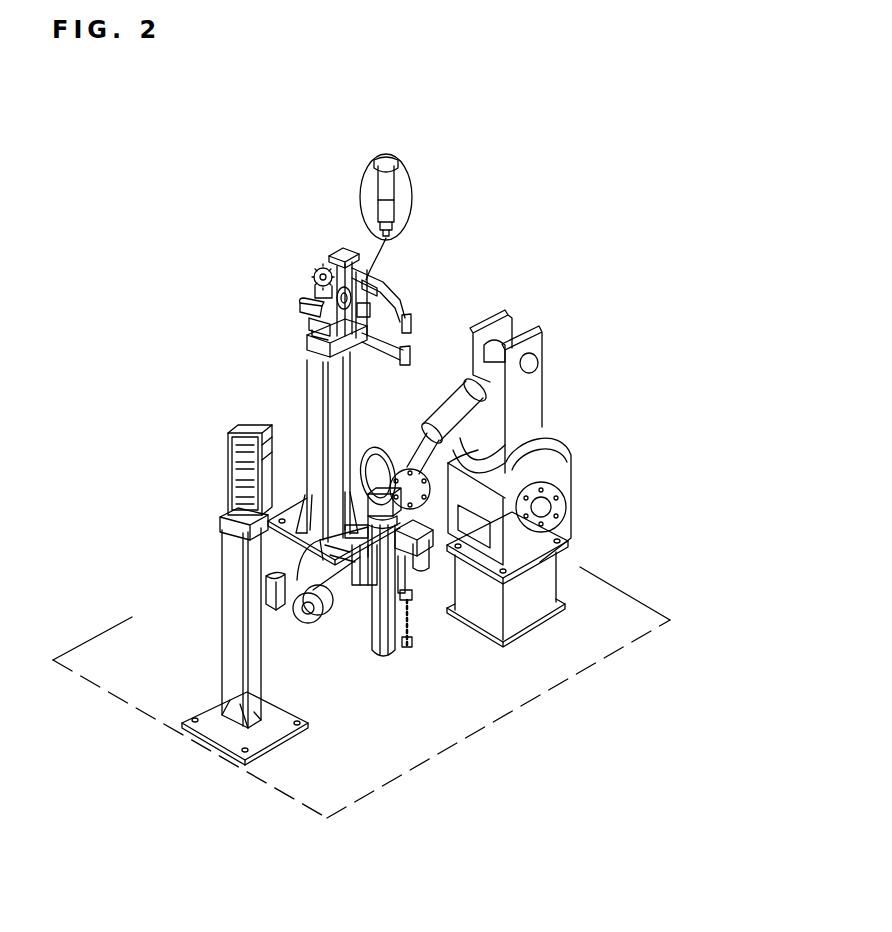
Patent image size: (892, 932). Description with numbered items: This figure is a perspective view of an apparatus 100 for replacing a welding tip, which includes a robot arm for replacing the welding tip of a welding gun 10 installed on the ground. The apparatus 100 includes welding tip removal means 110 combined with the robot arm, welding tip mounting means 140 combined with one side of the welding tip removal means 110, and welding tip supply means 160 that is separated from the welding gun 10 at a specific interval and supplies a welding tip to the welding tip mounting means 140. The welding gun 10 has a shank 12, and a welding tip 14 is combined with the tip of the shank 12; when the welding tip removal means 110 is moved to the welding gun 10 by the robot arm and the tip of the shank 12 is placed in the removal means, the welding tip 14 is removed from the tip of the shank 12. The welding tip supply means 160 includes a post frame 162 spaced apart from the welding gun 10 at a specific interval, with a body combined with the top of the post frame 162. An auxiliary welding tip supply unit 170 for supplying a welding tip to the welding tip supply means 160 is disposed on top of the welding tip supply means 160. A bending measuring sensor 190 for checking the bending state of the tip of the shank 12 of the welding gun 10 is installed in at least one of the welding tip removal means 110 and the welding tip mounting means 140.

The welding gun 10 is at (312, 290).
The shank 12 is at (395, 182).
The welding tip 14 is at (395, 212).
The apparatus for replacing a welding tip 100 is at (340, 625).
The welding tip removal means 110 is at (334, 583).
The welding tip mounting means 140 is at (397, 642).
The welding tip supply means 160 is at (212, 544).
The post frame 162 is at (233, 600).
The auxiliary welding tip supply unit 170 is at (212, 444).
The bending measuring sensor 190 is at (265, 657).